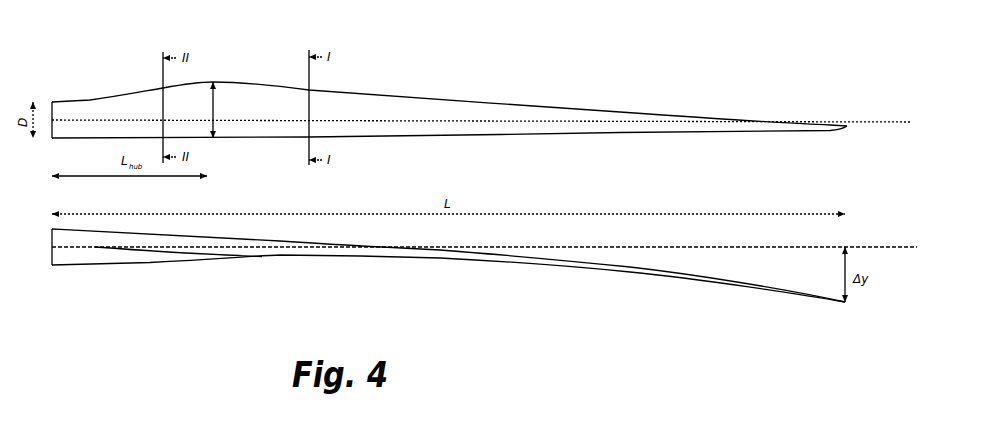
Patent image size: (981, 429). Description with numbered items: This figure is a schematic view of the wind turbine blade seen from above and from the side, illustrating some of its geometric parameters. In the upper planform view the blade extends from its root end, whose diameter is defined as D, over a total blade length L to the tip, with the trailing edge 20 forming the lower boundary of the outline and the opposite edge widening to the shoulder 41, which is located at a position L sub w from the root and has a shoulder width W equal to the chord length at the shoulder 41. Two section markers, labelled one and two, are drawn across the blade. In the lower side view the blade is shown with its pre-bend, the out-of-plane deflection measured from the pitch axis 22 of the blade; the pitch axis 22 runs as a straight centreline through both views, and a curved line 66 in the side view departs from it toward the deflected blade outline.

The trailing edge 20 is at (333, 253).
The pitch axis 22 is at (367, 121).
The shoulder 41 is at (213, 82).
The prebend curve 66 is at (205, 254).